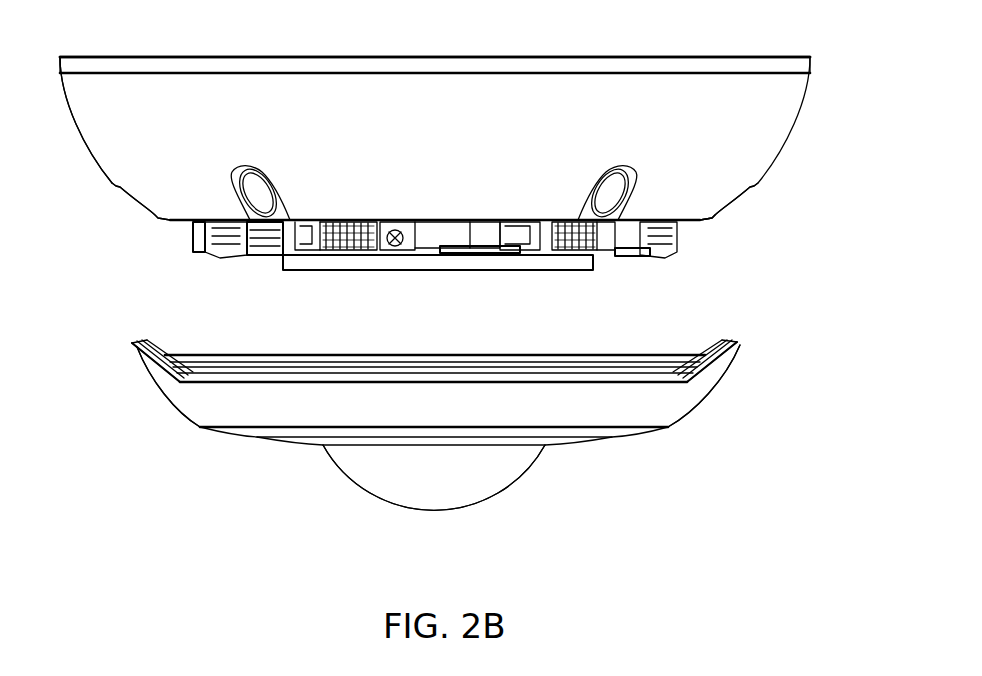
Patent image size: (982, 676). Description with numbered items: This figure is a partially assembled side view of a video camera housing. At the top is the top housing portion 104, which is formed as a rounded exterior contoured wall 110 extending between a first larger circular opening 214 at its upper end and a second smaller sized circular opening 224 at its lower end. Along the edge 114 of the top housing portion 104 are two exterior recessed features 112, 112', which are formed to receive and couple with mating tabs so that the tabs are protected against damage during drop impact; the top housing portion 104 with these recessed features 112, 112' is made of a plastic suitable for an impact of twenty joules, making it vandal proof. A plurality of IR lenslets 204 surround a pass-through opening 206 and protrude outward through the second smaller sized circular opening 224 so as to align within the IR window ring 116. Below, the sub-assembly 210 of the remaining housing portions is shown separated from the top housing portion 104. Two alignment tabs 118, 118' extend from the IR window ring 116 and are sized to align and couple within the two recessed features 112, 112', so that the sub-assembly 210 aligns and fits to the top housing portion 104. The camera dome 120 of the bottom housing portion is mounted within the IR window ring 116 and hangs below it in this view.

The top housing portion 104 is at (100, 138).
The rounded exterior contoured wall 110 is at (792, 130).
The exterior recessed feature 112 is at (116, 203).
The exterior recessed feature 112' is at (759, 203).
The edge of the top housing portion 114 is at (465, 355).
The IR window ring 116 is at (192, 406).
The alignment tab 118 is at (127, 366).
The alignment tab 118' is at (746, 365).
The camera dome 120 is at (500, 490).
The IR lenslets 204 is at (343, 257).
The pass-through opening 206 is at (390, 260).
The sub-assembly 210 is at (803, 337).
The first larger circular opening 214 is at (810, 62).
The second smaller sized circular opening 224 is at (702, 221).